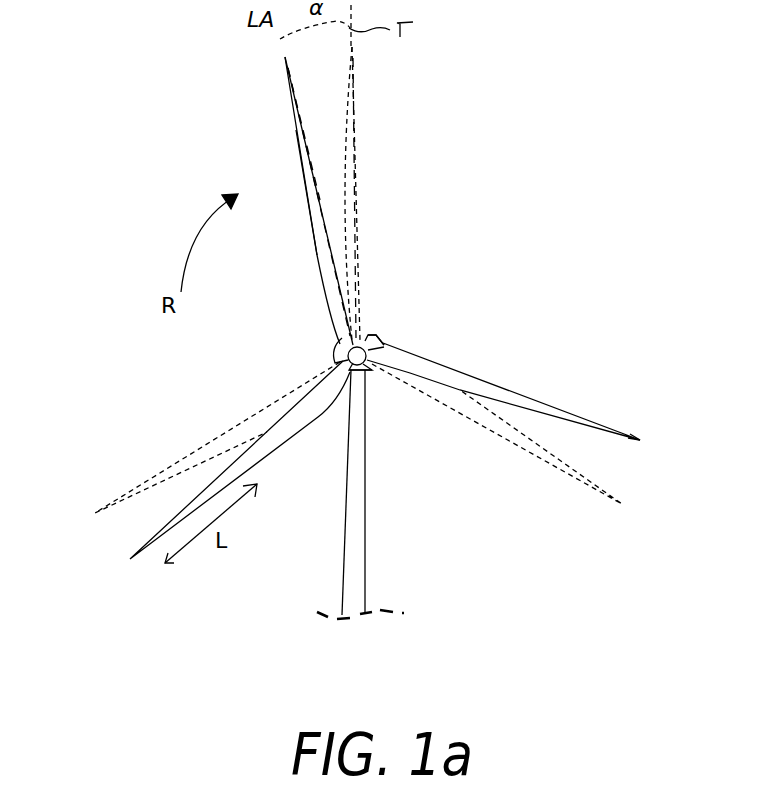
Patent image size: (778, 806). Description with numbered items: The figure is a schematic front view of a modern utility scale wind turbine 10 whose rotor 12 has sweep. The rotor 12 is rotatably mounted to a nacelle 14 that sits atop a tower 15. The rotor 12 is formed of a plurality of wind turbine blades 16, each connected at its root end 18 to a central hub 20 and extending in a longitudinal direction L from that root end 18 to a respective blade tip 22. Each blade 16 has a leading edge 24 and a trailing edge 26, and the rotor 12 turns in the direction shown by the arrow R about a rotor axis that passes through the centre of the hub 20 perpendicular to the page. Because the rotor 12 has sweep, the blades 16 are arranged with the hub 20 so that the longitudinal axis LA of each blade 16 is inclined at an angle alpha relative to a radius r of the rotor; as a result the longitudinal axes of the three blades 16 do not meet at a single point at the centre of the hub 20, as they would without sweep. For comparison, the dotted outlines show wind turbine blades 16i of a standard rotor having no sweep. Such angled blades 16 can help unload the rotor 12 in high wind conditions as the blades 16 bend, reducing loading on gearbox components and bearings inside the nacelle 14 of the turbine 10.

The wind turbine 10 is at (118, 160).
The rotor 12 is at (408, 310).
The nacelle 14 is at (330, 354).
The tower 15 is at (366, 524).
The wind turbine blade 16 is at (320, 264).
The wind turbine blade of a standard rotor not having sweep 16i is at (358, 207).
The root end 18 is at (388, 346).
The central hub 20 is at (358, 358).
The blade tip 22 is at (645, 440).
The leading edge 24 is at (308, 134).
The trailing edge 26 is at (302, 182).